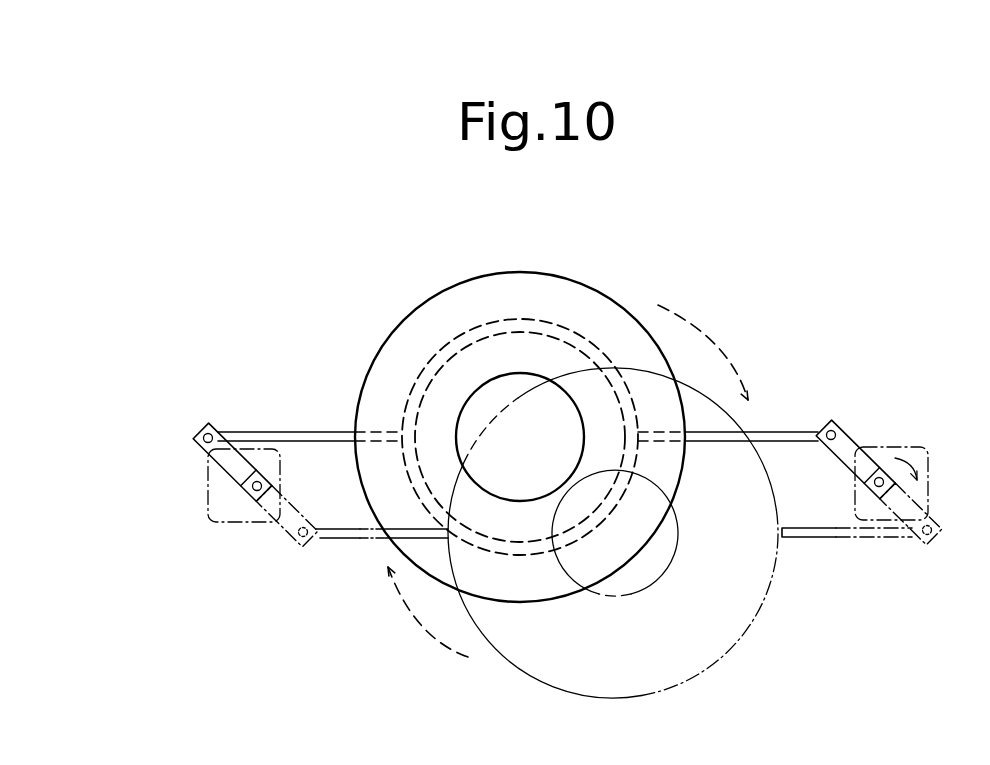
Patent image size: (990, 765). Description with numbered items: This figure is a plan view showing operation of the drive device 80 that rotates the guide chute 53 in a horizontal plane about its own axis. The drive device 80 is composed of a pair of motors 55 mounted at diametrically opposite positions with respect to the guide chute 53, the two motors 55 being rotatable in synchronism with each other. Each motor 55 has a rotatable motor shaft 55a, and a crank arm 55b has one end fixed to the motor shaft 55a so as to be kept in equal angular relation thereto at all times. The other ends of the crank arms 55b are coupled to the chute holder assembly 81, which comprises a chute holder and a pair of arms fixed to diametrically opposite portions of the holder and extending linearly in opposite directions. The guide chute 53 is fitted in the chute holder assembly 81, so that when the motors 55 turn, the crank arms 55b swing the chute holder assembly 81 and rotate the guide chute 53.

The guide chute 53 is at (583, 277).
The chute holder assembly 81 is at (298, 428).
The drive device 80 is at (898, 430).
The motor 55 is at (220, 497).
The motor shaft 55a is at (258, 494).
The crank arm 55b is at (213, 457).